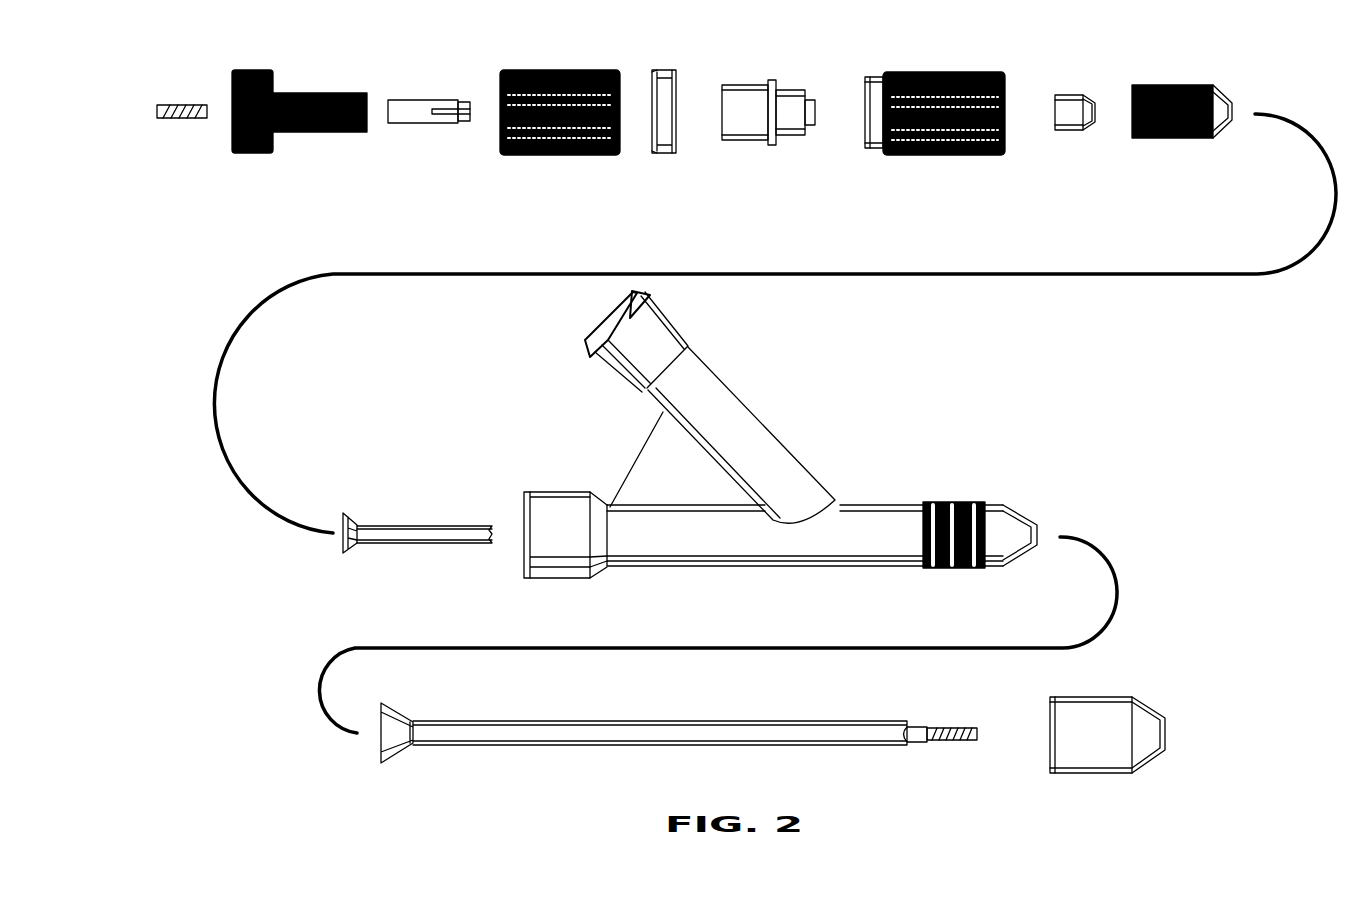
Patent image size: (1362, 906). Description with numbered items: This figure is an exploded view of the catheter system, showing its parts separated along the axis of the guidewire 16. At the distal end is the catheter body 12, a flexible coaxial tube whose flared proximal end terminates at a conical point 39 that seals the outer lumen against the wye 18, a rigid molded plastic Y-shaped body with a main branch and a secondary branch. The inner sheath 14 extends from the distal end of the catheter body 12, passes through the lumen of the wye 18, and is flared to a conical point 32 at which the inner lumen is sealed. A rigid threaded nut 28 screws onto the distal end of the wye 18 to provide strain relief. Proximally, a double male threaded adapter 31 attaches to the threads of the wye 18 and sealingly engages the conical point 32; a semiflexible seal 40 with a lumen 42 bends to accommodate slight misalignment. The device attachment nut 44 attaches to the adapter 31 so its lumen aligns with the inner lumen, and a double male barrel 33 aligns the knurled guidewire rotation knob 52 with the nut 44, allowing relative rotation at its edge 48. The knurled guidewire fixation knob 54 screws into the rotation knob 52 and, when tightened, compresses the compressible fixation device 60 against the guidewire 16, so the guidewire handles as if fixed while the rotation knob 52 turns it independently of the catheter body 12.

The catheter body 12 is at (459, 733).
The inner sheath 14 is at (438, 526).
The guidewire 16 is at (165, 104).
The wye 18 is at (655, 538).
The rigid threaded nut 28 is at (1086, 720).
The double male threaded adapter 31 is at (1166, 85).
The conical point 32 is at (353, 525).
The double male barrel 33 is at (746, 85).
The conical point 39 is at (394, 738).
The semiflexible seal 40 is at (1069, 95).
The lumen 42 is at (1096, 125).
The device attachment nut 44 is at (916, 72).
The edge 48 is at (668, 70).
The knurled guidewire rotation knob 52 is at (558, 70).
The knurled guidewire fixation knob 54 is at (246, 69).
The compressible fixation device 60 is at (421, 100).